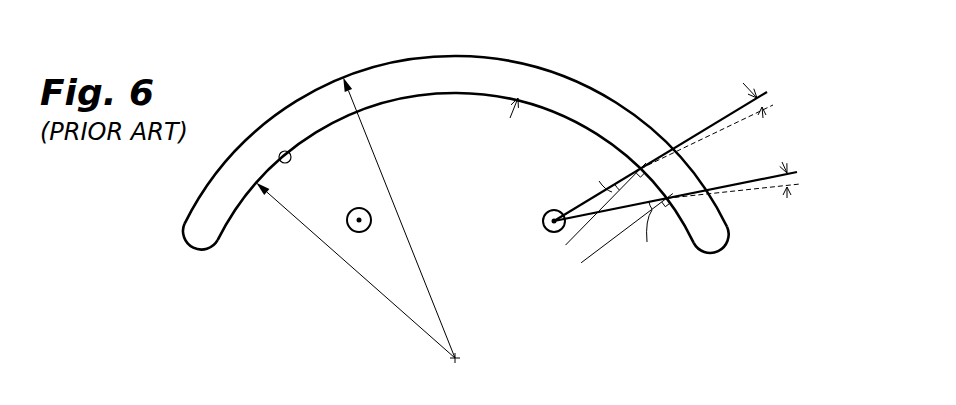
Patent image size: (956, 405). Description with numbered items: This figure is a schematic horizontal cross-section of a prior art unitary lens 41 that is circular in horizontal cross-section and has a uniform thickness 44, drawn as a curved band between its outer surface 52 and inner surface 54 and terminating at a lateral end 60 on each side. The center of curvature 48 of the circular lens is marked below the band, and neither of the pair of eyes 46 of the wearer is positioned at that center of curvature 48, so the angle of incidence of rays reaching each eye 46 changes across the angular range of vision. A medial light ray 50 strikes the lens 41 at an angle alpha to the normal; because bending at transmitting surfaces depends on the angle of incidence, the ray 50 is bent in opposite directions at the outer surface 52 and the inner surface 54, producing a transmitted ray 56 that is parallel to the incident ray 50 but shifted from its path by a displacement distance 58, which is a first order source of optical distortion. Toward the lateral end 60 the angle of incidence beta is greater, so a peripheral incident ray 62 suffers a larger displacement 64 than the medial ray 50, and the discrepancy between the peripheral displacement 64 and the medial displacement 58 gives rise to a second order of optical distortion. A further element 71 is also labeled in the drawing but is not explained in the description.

The curved light guide 41 is at (634, 50).
The wall thickness 44 is at (537, 56).
The light source 46 is at (350, 229).
The center of curvature 48 is at (457, 360).
The light ray 50 is at (697, 134).
The outer surface radius 52 is at (308, 97).
The reflection point 54 is at (274, 151).
The incident ray 56 is at (582, 203).
The ray offset 58 is at (772, 97).
The light guide end 60 is at (172, 203).
The light ray 62 is at (740, 180).
The ray offset 64 is at (800, 183).
The base 71 is at (643, 404).